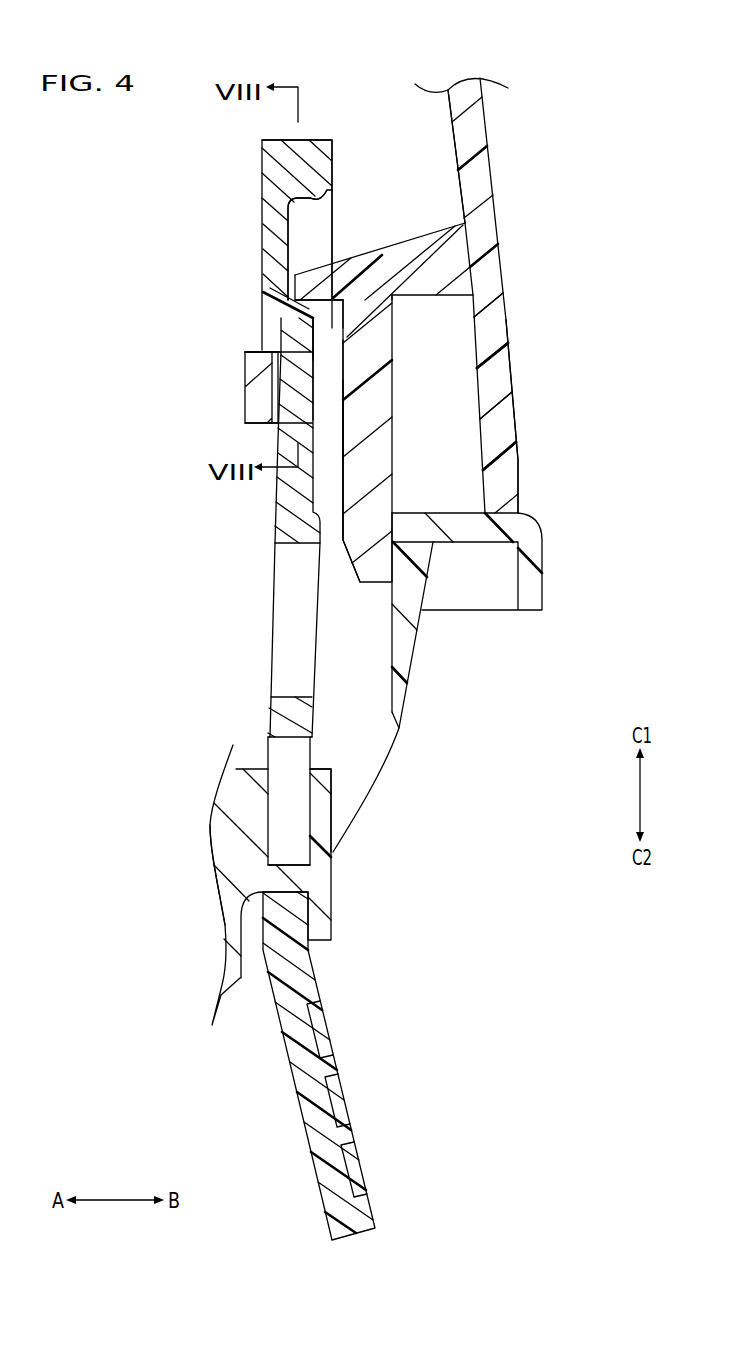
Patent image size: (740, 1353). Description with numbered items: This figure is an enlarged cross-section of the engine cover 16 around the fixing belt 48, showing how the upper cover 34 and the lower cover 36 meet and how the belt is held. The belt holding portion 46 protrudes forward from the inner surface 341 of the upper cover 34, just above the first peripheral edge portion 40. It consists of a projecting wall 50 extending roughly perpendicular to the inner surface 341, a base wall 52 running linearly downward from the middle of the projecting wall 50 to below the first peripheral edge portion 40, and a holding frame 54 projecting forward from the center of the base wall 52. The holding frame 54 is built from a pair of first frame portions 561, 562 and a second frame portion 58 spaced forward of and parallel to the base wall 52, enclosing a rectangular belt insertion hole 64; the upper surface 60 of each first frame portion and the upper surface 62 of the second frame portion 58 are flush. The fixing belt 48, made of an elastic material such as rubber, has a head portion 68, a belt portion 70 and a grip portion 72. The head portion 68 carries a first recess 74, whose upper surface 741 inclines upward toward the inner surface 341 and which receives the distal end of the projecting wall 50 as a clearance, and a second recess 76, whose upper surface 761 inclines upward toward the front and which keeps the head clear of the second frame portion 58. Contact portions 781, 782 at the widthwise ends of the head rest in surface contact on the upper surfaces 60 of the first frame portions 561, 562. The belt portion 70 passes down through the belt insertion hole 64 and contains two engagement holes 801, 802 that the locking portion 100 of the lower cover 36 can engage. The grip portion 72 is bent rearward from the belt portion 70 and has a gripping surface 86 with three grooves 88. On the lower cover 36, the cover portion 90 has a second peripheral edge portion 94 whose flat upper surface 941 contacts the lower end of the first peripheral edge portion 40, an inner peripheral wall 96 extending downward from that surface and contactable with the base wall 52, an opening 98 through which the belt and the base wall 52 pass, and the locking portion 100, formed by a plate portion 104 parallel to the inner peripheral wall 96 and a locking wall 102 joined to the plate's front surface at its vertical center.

The engine cover 16 is at (503, 160).
The upper cover 34 is at (521, 372).
The lower cover 36 is at (234, 998).
The first peripheral edge portion 40 is at (507, 483).
The belt holding portion 46 is at (409, 232).
The fixing belt 48 is at (258, 207).
The projecting wall 50 is at (393, 263).
The base wall 52 is at (382, 455).
The holding frame 54 is at (240, 385).
The second frame portion 58 is at (258, 410).
The upper surface 60 is at (328, 368).
The upper surface 62 is at (258, 348).
The belt insertion hole 64 is at (328, 397).
The head portion 68 is at (315, 150).
The belt portion 70 is at (285, 517).
The grip portion 72 is at (333, 1170).
The first recess 74 is at (313, 240).
The second recess 76 is at (268, 325).
The gripping surface 86 is at (333, 1060).
The grooves 88 is at (328, 1097).
The cover portion 90 is at (236, 954).
The second peripheral edge portion 94 is at (530, 578).
The inner peripheral wall 96 is at (402, 655).
The opening 98 is at (373, 740).
The locking portion 100 is at (338, 892).
The locking wall 102 is at (292, 875).
The plate portion 104 is at (320, 815).
The inner surface 341 is at (455, 150).
The first frame portion 561 is at (350, 420).
The first frame portion 562 is at (402, 470).
The upper surface 741 is at (318, 198).
The upper surface 761 is at (268, 312).
The contact portion 781 is at (322, 318).
The contact portion 782 is at (388, 337).
The engagement hole 801 is at (288, 612).
The engagement hole 802 is at (297, 753).
The upper surface 941 is at (425, 513).